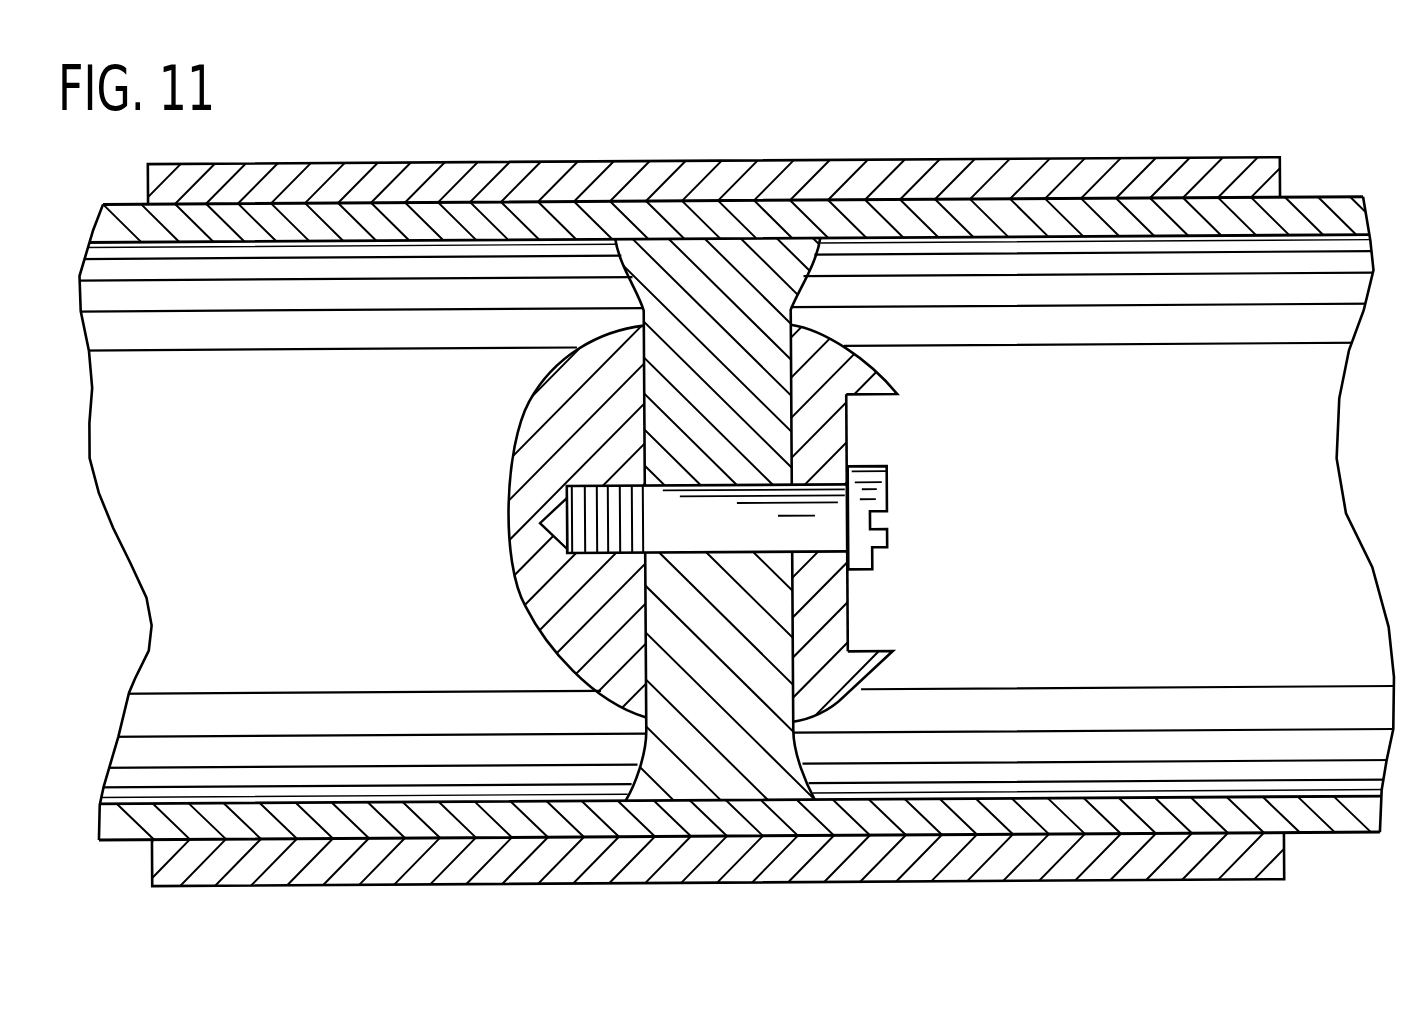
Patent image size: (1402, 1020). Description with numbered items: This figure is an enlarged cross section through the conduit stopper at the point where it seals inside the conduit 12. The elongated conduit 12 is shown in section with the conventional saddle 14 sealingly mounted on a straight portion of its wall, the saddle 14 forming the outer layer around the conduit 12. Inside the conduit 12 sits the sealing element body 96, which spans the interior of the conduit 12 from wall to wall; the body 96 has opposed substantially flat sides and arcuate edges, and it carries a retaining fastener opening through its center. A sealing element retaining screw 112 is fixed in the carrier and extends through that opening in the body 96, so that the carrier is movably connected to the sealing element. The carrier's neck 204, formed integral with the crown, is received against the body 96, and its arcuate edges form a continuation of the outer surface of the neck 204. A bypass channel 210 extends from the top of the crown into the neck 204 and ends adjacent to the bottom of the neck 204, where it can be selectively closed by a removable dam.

The conduit 12 is at (773, 213).
The saddle 14 is at (1020, 155).
The sealing element body 96 is at (806, 285).
The sealing element retaining screw 112 is at (872, 545).
The neck 204 is at (827, 678).
The bypass channel 210 is at (855, 643).